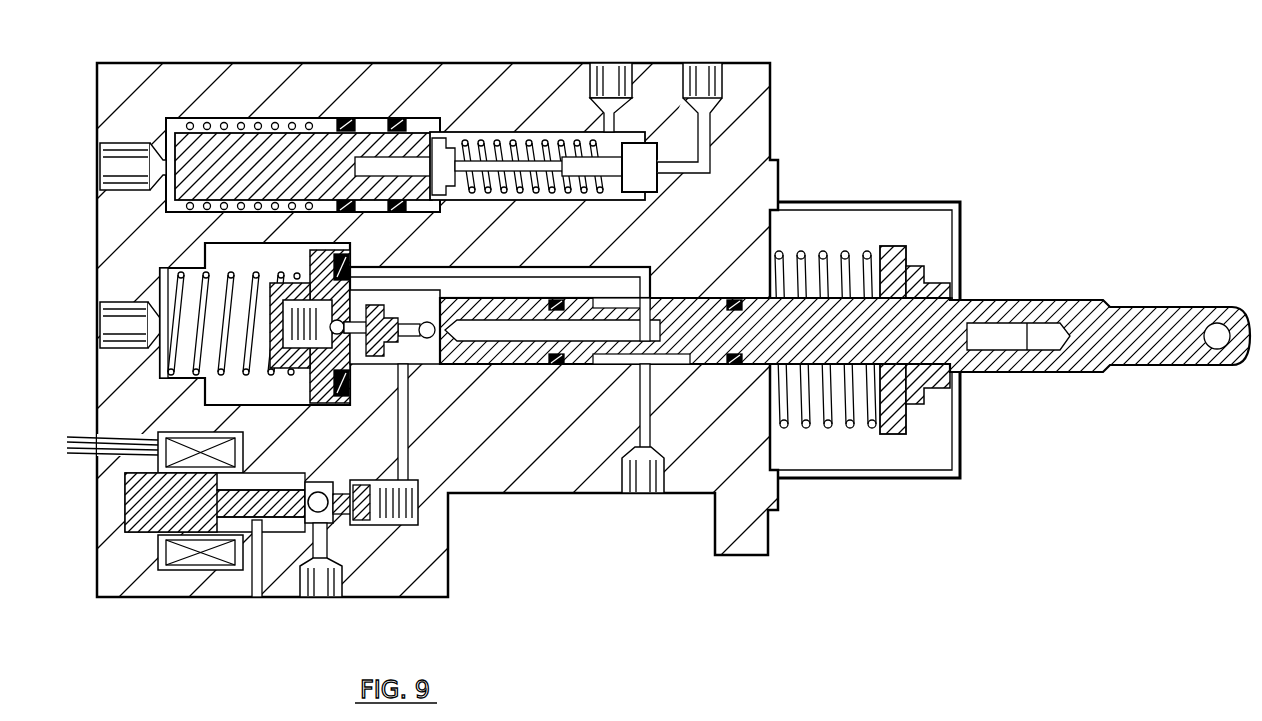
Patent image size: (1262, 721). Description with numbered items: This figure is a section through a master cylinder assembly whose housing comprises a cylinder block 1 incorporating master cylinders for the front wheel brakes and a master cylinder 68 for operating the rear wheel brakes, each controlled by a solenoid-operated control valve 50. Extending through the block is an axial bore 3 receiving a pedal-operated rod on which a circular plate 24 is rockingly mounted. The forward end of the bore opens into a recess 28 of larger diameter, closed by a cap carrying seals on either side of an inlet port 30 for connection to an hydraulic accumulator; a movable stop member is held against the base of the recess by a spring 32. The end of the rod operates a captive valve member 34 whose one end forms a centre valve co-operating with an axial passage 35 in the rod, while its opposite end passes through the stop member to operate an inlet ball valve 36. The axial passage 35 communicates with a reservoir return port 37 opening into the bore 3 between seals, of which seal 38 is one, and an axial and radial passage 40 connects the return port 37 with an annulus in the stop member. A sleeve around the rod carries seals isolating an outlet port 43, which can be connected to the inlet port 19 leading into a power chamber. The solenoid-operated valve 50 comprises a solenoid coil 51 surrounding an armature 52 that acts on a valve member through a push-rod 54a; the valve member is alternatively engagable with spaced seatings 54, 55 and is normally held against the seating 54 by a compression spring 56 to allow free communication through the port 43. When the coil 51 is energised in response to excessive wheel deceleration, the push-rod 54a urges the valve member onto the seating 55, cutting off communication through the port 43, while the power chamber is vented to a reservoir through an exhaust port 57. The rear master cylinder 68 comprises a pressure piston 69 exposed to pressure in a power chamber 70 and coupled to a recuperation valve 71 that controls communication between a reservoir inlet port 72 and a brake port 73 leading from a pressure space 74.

The cylinder block 1 is at (549, 490).
The axial bore 3 is at (545, 357).
The inlet port 19 is at (158, 164).
The circular plate 24 is at (896, 246).
The recess 28 is at (249, 269).
The inlet port 30 is at (157, 326).
The spring 32 is at (234, 338).
The captive valve member 34 is at (424, 322).
The axial passage 35 is at (578, 330).
The inlet ball valve 36 is at (310, 340).
The reservoir return port 37 is at (640, 432).
The seal 38 is at (375, 303).
The axial and radial passage 40 is at (651, 289).
The outlet port 43 is at (408, 472).
The solenoid-operated control valve 50 is at (185, 558).
The solenoid coil 51 is at (163, 555).
The armature 52 is at (163, 497).
The seating 54 is at (305, 565).
The push-rod 54a is at (237, 502).
The seating 55 is at (330, 497).
The compression spring 56 is at (393, 515).
The exhaust port 57 is at (260, 580).
The master cylinder 68 is at (463, 139).
The pressure piston 69 is at (255, 150).
The power chamber 70 is at (212, 119).
The recuperation valve 71 is at (640, 165).
The reservoir inlet port 72 is at (704, 122).
The brake port 73 is at (558, 143).
The pressure space 74 is at (505, 135).